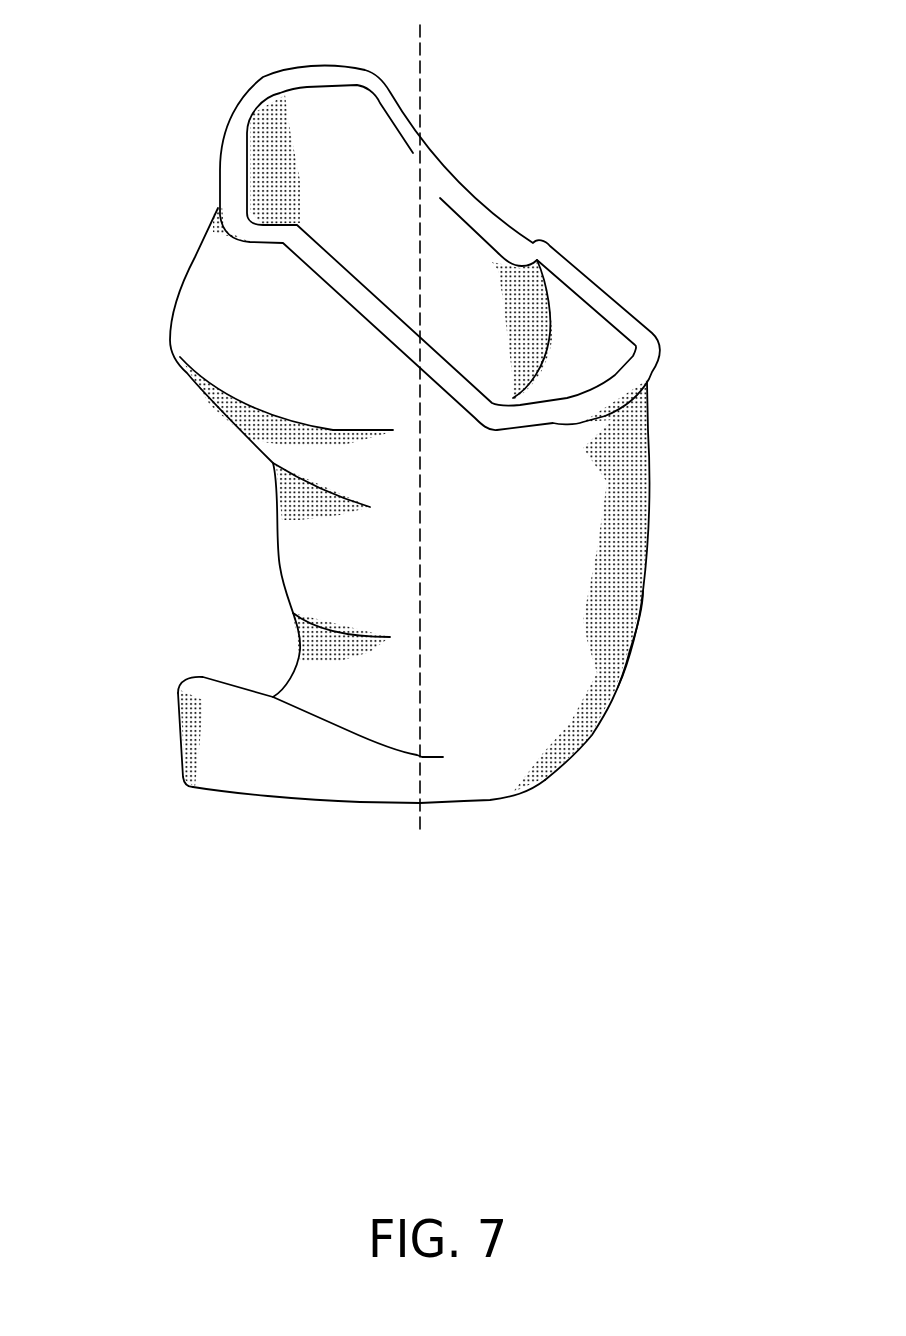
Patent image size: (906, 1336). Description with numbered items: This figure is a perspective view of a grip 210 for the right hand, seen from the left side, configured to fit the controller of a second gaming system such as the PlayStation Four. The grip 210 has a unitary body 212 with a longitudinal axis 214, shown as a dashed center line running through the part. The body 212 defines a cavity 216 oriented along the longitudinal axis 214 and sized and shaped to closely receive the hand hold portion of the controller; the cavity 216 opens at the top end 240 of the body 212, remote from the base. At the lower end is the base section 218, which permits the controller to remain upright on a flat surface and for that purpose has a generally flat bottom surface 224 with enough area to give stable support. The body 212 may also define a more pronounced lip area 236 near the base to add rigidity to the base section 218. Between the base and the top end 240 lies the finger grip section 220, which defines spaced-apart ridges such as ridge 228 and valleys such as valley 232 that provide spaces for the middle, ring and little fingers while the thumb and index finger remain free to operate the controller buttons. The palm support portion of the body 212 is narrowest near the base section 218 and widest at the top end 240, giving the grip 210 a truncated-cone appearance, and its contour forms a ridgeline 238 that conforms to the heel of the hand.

The grip 210 is at (645, 252).
The unitary body 212 is at (648, 433).
The longitudinal axis 214 is at (422, 60).
The cavity 216 is at (453, 307).
The base section 218 is at (178, 713).
The finger grip section 220 is at (288, 600).
The bottom surface 224 is at (367, 803).
The ridge 228 is at (208, 363).
The valley 232 is at (277, 530).
The lip area 236 is at (220, 778).
The ridgeline 238 is at (645, 590).
The top end 240 is at (220, 170).